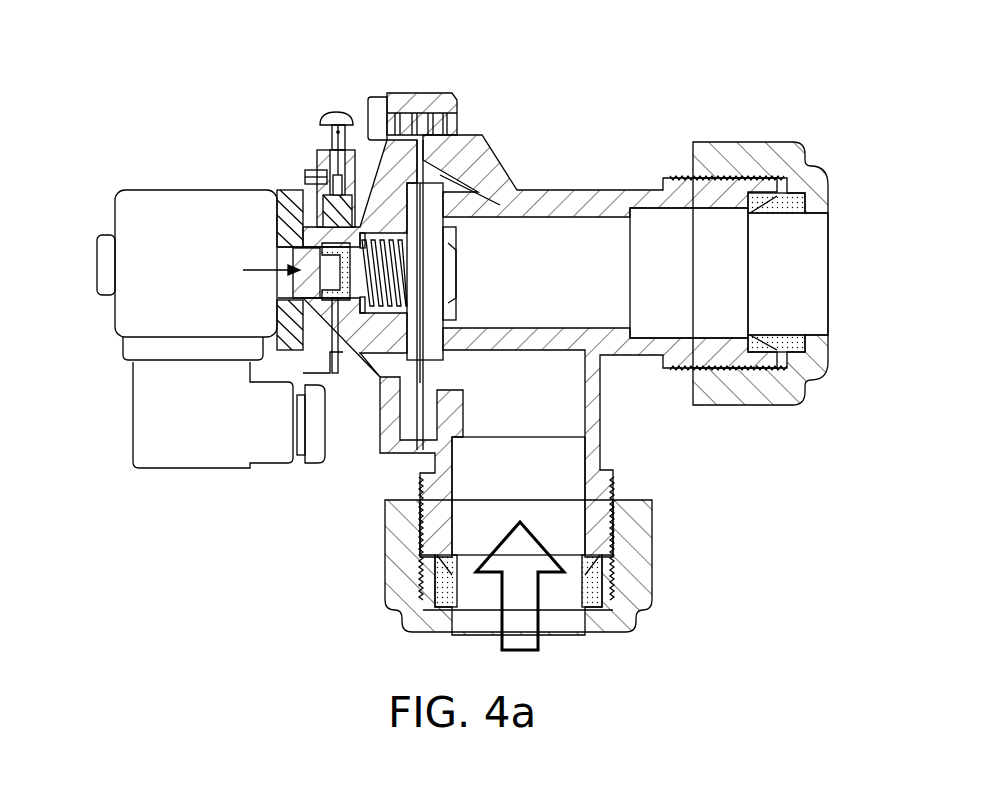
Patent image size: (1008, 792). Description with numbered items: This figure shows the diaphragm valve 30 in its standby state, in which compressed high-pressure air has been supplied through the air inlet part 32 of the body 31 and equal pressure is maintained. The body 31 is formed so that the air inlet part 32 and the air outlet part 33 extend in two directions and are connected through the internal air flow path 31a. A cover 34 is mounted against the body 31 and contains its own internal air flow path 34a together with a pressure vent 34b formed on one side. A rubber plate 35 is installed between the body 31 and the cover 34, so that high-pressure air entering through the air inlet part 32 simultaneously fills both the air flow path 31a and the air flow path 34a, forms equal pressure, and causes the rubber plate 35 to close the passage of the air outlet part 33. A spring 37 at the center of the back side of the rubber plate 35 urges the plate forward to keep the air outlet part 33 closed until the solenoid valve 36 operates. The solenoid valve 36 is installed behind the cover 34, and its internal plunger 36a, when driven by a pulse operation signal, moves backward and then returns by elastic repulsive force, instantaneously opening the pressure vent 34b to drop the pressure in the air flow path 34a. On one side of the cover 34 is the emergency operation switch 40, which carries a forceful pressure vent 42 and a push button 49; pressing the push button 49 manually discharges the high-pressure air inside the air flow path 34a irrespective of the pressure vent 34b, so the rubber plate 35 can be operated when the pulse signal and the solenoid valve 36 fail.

The diaphragm valve 30 is at (807, 132).
The body 31 is at (445, 93).
The air flow path 31a is at (468, 180).
The air inlet part 32 is at (600, 530).
The air outlet part 33 is at (718, 193).
The cover 34 is at (392, 95).
The air flow path 34a is at (400, 198).
The pressure vent 34b is at (350, 340).
The rubber plate 35 is at (423, 277).
The solenoid valve 36 is at (128, 207).
The plunger 36a is at (313, 285).
The spring 37 is at (405, 332).
The emergency operation switch 40 is at (310, 152).
The forceful pressure vent 42 is at (305, 177).
The push button 49 is at (330, 118).